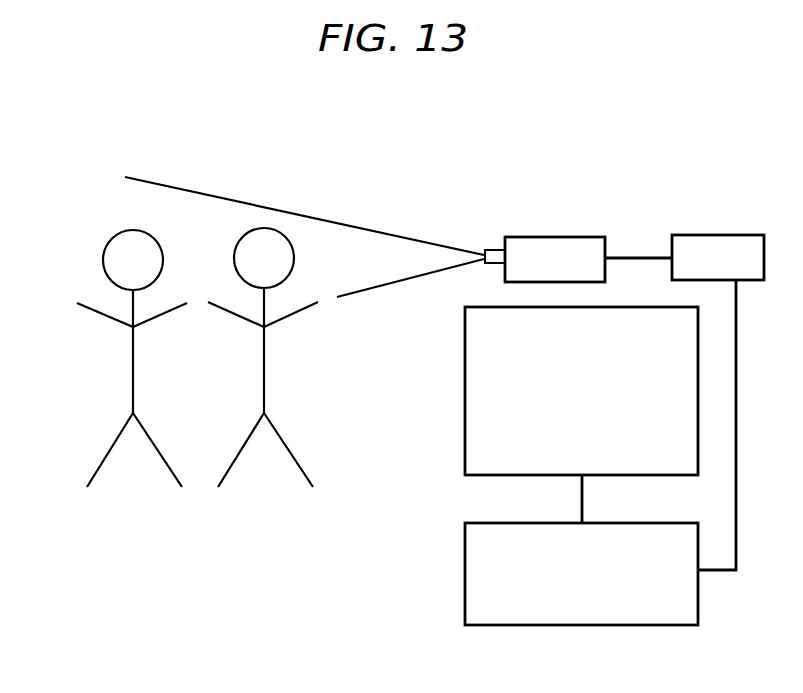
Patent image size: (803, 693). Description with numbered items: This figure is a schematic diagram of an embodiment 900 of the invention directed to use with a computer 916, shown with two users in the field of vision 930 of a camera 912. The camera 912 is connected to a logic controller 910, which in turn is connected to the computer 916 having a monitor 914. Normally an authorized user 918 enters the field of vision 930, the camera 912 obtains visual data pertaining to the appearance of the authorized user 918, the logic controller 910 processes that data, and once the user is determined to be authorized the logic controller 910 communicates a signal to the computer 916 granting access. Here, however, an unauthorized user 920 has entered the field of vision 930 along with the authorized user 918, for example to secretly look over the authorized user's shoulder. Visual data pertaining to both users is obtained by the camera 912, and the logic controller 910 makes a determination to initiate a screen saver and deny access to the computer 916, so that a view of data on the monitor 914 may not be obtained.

The embodiment 900 is at (616, 130).
The logic controller 910 is at (718, 235).
The camera 912 is at (548, 237).
The monitor 914 is at (465, 362).
The computer 916 is at (465, 570).
The authorized user 918 is at (237, 248).
The unauthorized user 920 is at (112, 239).
The field of vision 930 is at (275, 208).